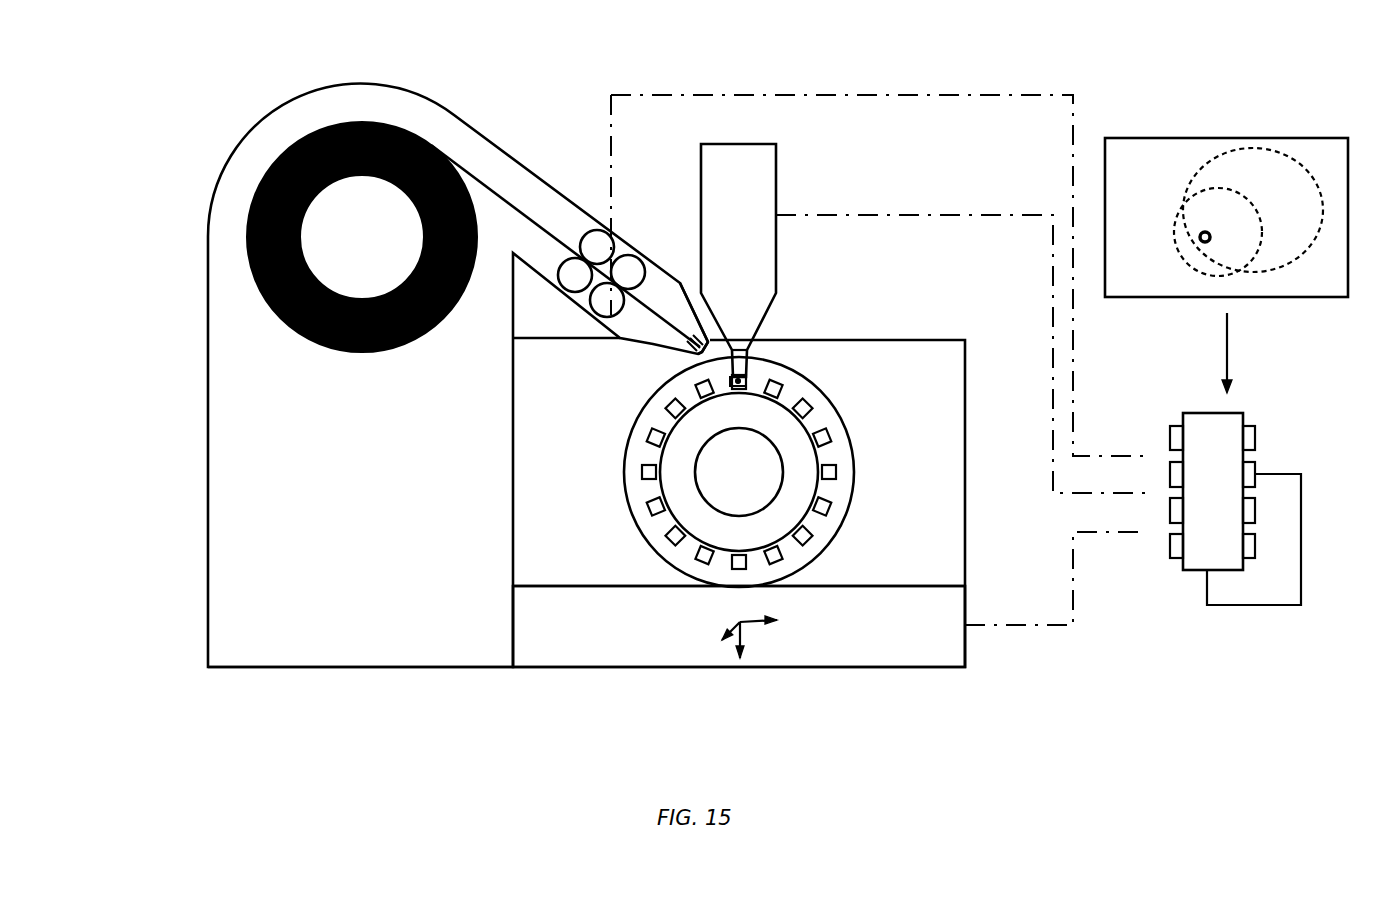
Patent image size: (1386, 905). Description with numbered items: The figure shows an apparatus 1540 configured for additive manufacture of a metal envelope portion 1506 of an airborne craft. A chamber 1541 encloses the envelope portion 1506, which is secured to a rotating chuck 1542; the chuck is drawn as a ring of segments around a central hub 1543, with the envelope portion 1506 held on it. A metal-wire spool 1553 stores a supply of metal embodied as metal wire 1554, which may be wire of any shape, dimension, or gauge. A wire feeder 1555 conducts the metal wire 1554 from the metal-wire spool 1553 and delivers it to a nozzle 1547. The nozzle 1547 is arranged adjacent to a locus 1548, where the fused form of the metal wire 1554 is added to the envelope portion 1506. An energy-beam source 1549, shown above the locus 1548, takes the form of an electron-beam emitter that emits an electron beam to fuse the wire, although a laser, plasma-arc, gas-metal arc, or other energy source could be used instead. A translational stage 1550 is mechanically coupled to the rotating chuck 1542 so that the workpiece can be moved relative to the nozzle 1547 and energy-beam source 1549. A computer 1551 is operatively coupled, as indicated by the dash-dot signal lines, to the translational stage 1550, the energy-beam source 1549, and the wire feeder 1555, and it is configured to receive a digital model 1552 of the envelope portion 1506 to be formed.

The apparatus 1540 is at (170, 113).
The metal-wire spool 1553 is at (389, 249).
The wire feeder 1555 is at (577, 232).
The metal wire 1554 is at (655, 313).
The nozzle 1547 is at (690, 358).
The energy-beam source 1549 is at (767, 232).
The locus 1548 is at (732, 384).
The chamber 1541 is at (598, 532).
The translational stage 1550 is at (949, 646).
The envelope portion 1506 is at (832, 428).
The rotating chuck 1542 is at (857, 458).
The shaft 1543 is at (766, 486).
The digital model 1552 is at (1169, 282).
The computer 1551 is at (1175, 593).